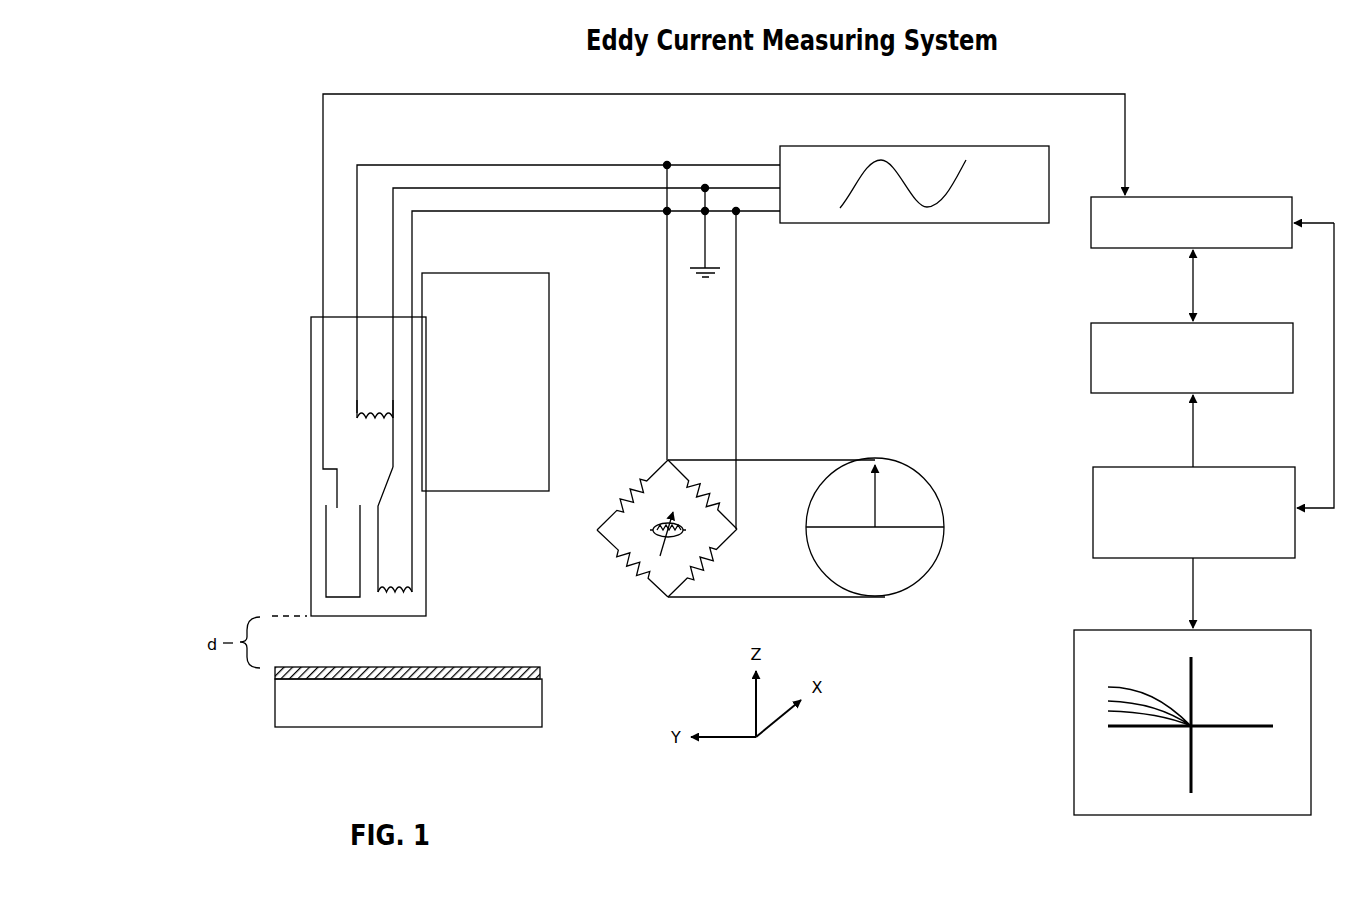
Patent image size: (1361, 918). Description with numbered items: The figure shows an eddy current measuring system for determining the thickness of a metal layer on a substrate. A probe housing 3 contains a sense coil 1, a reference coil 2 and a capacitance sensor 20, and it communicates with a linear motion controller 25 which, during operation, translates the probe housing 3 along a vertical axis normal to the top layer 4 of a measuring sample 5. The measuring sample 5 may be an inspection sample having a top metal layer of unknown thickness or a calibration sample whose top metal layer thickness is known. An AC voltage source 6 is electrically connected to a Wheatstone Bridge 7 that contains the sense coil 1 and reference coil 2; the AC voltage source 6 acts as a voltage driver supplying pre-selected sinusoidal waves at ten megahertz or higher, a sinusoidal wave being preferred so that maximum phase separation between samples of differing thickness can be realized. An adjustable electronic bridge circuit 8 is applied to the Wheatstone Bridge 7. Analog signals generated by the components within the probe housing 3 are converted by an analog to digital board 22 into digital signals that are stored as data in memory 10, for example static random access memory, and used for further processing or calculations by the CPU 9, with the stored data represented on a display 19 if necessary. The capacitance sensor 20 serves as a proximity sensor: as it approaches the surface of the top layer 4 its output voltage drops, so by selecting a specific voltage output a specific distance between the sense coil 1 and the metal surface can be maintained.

The sense coil 1 is at (415, 598).
The reference coil 2 is at (348, 420).
The probe housing 3 is at (315, 332).
The top layer 4 is at (542, 673).
The measuring sample 5 is at (293, 707).
The AC voltage source 6 is at (808, 170).
The Wheatstone Bridge 7 is at (618, 573).
The adjustable electronic bridge circuit 8 is at (918, 573).
The CPU 9 is at (1116, 491).
The memory 10 is at (1117, 350).
The display 19 is at (1103, 660).
The capacitance sensor 20 is at (327, 579).
The analog to digital (A/D) board 22 is at (1120, 228).
The linear motion controller 25 is at (456, 298).